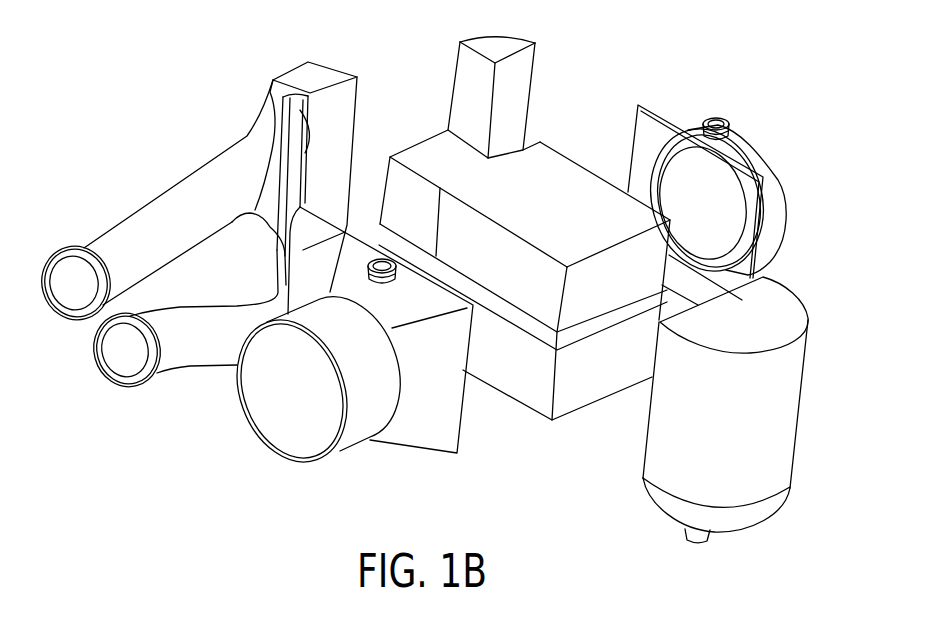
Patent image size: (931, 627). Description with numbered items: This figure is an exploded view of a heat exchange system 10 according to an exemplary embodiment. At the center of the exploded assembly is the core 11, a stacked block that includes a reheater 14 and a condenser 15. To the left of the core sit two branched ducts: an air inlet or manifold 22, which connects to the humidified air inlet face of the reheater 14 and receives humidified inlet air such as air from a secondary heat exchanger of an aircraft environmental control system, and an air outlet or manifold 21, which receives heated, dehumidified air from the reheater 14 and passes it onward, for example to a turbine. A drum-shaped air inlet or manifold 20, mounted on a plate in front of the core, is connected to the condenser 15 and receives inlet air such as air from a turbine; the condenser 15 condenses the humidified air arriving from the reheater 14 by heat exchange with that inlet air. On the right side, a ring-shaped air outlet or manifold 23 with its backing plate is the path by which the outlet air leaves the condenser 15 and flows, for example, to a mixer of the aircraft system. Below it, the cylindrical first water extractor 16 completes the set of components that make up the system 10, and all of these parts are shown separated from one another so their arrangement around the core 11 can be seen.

The heat exchange system 10 is at (690, 73).
The core 11 is at (552, 159).
The reheater 14 is at (428, 158).
The condenser 15 is at (588, 188).
The first water extractor 16 is at (797, 309).
The air inlet or manifold 20 is at (440, 447).
The air outlet or manifold 21 is at (235, 313).
The air inlet or manifold 22 is at (167, 213).
The air outlet or manifold 23 is at (773, 222).